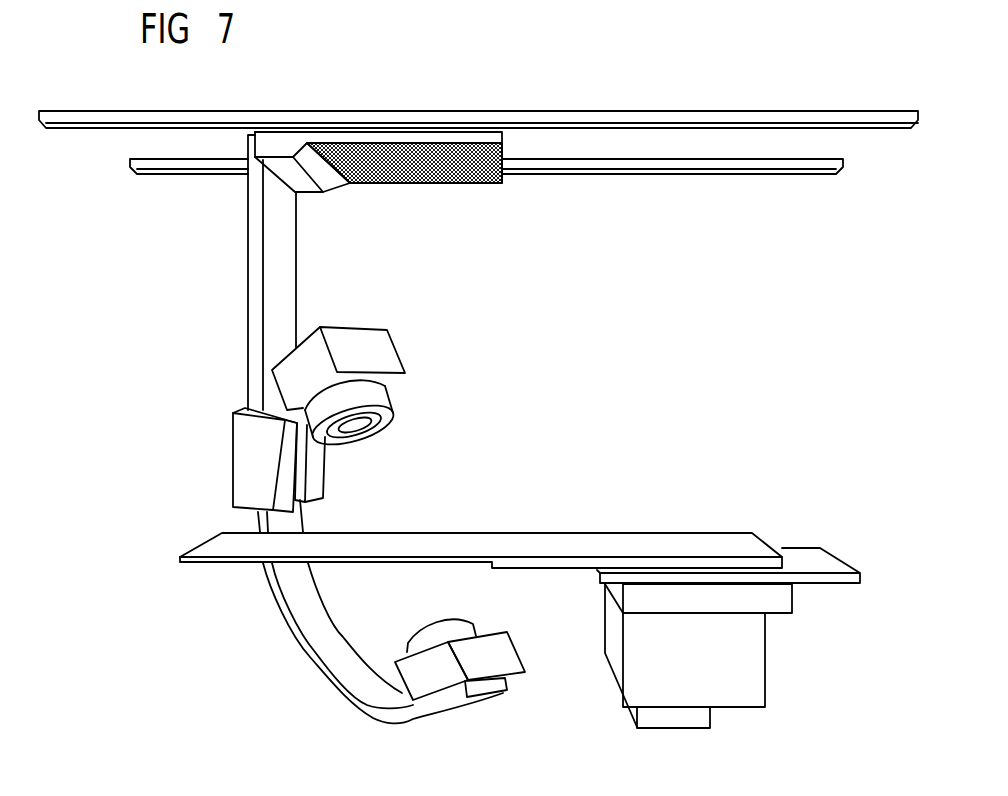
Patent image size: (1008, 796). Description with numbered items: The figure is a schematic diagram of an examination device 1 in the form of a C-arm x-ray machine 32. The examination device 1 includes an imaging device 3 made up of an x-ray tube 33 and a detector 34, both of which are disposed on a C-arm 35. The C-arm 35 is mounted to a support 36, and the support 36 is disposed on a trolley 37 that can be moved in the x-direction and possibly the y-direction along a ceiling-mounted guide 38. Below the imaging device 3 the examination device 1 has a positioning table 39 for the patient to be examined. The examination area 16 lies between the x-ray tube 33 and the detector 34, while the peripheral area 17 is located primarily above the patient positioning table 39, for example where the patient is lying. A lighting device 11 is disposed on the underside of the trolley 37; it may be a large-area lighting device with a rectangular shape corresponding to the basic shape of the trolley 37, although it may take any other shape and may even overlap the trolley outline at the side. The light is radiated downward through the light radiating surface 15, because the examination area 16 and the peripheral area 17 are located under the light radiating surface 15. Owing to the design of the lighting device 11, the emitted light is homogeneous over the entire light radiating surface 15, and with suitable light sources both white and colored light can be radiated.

The examination device 1 is at (795, 317).
The imaging device 3 is at (566, 510).
The lighting device 11 is at (463, 197).
The light radiating surface 15 is at (407, 172).
The examination area 16 is at (433, 519).
The peripheral area 17 is at (600, 336).
The C-arm x-ray machine 32 is at (205, 411).
The x-ray tube 33 is at (377, 400).
The detector 34 is at (465, 628).
The C-arm 35 is at (325, 660).
The support 36 is at (276, 240).
The trolley 37 is at (447, 134).
The ceiling-mounted guide 38 is at (797, 118).
The positioning table 39 is at (717, 537).